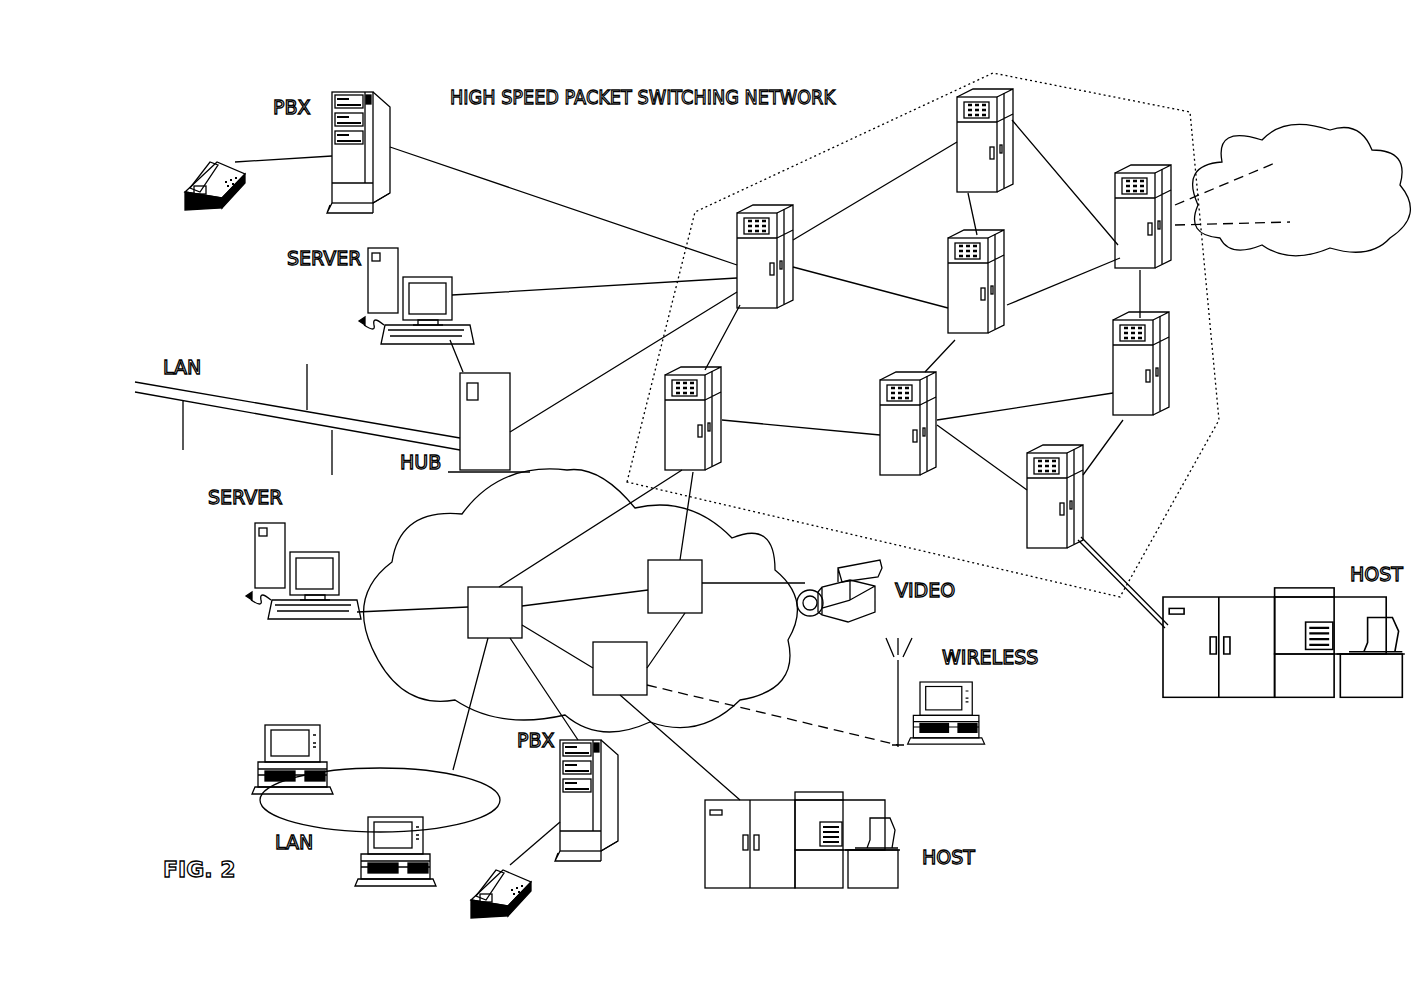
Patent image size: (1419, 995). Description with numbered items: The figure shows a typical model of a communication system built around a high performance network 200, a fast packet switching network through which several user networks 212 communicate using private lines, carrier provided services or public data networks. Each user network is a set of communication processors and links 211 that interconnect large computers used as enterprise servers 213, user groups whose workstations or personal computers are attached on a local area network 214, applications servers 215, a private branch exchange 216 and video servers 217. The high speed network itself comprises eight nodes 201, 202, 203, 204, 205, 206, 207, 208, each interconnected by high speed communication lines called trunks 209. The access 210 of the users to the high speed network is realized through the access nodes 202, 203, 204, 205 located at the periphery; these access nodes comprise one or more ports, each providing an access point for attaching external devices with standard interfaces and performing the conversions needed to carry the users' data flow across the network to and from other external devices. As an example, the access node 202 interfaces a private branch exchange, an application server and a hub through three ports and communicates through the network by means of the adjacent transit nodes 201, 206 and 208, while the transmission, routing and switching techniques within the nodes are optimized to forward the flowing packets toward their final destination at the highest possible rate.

The high performance network 200 is at (772, 177).
The transit node 201 is at (1007, 93).
The access node 202 is at (793, 208).
The access node 203 is at (1067, 445).
The access node 204 is at (1165, 168).
The access node 205 is at (722, 385).
The transit node 206 is at (908, 374).
The node 207 is at (1160, 315).
The transit node 208 is at (995, 235).
The trunk 209 is at (1075, 280).
The access 210 is at (606, 220).
The communication processors and links 211 is at (415, 535).
The user network 212 is at (1300, 134).
The enterprise server 213 is at (885, 818).
The local area network 214 is at (367, 760).
The applications server 215 is at (284, 530).
The private branch exchange 216 is at (570, 862).
The video server 217 is at (845, 570).